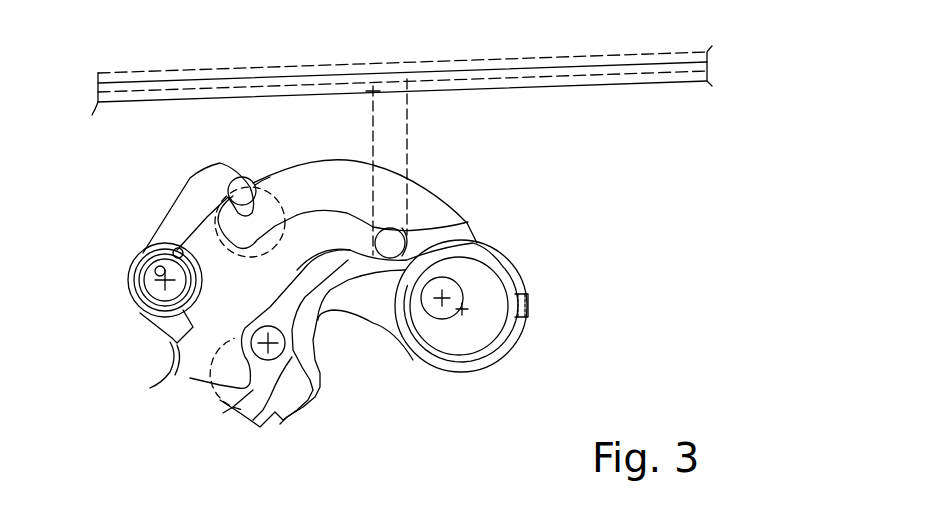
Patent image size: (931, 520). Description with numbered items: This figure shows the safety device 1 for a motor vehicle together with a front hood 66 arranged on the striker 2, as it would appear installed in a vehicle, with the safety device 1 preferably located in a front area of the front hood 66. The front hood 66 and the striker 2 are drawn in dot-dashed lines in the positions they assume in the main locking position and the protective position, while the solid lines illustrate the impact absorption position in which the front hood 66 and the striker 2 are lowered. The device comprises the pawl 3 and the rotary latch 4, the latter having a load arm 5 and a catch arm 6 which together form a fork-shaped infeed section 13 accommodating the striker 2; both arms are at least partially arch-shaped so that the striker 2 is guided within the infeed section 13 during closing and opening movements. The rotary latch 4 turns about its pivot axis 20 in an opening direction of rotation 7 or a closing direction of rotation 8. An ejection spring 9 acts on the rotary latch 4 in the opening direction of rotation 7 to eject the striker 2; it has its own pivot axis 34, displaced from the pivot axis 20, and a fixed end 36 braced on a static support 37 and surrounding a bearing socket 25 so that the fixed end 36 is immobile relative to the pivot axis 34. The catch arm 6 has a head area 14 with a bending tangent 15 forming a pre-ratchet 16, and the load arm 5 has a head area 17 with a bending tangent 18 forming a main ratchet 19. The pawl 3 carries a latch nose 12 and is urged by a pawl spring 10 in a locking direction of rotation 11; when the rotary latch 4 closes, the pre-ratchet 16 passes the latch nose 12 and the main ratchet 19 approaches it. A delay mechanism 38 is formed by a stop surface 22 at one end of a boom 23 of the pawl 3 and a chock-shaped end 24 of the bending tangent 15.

The safety device 1 is at (140, 178).
The striker 2 is at (397, 243).
The pawl 3 is at (190, 200).
The rotary latch 4 is at (478, 328).
The load arm 5 is at (432, 203).
The catch arm 6 is at (377, 315).
The opening direction of rotation 7 is at (537, 265).
The closing direction of rotation 8 is at (536, 236).
The ejection spring 9 is at (438, 363).
The pawl spring 10 is at (148, 255).
The locking direction of rotation 11 is at (132, 314).
The latch nose 12 is at (242, 185).
The infeed section 13 is at (342, 165).
The head area 14 is at (262, 428).
The bending tangent 15 is at (222, 398).
The pre-ratchet 16 is at (213, 348).
The head area 17 is at (262, 183).
The bending tangent 18 is at (235, 240).
The main ratchet 19 is at (262, 188).
The pivot axis 20 is at (435, 300).
The stop surface 22 is at (163, 373).
The boom 23 is at (172, 334).
The chock-shaped end 24 is at (222, 388).
The bearing socket 25 is at (263, 332).
The pivot axis 34 is at (462, 311).
The fixed end 36 is at (528, 315).
The static support 37 is at (520, 298).
The delay mechanism 38 is at (502, 330).
The front hood 66 is at (288, 89).